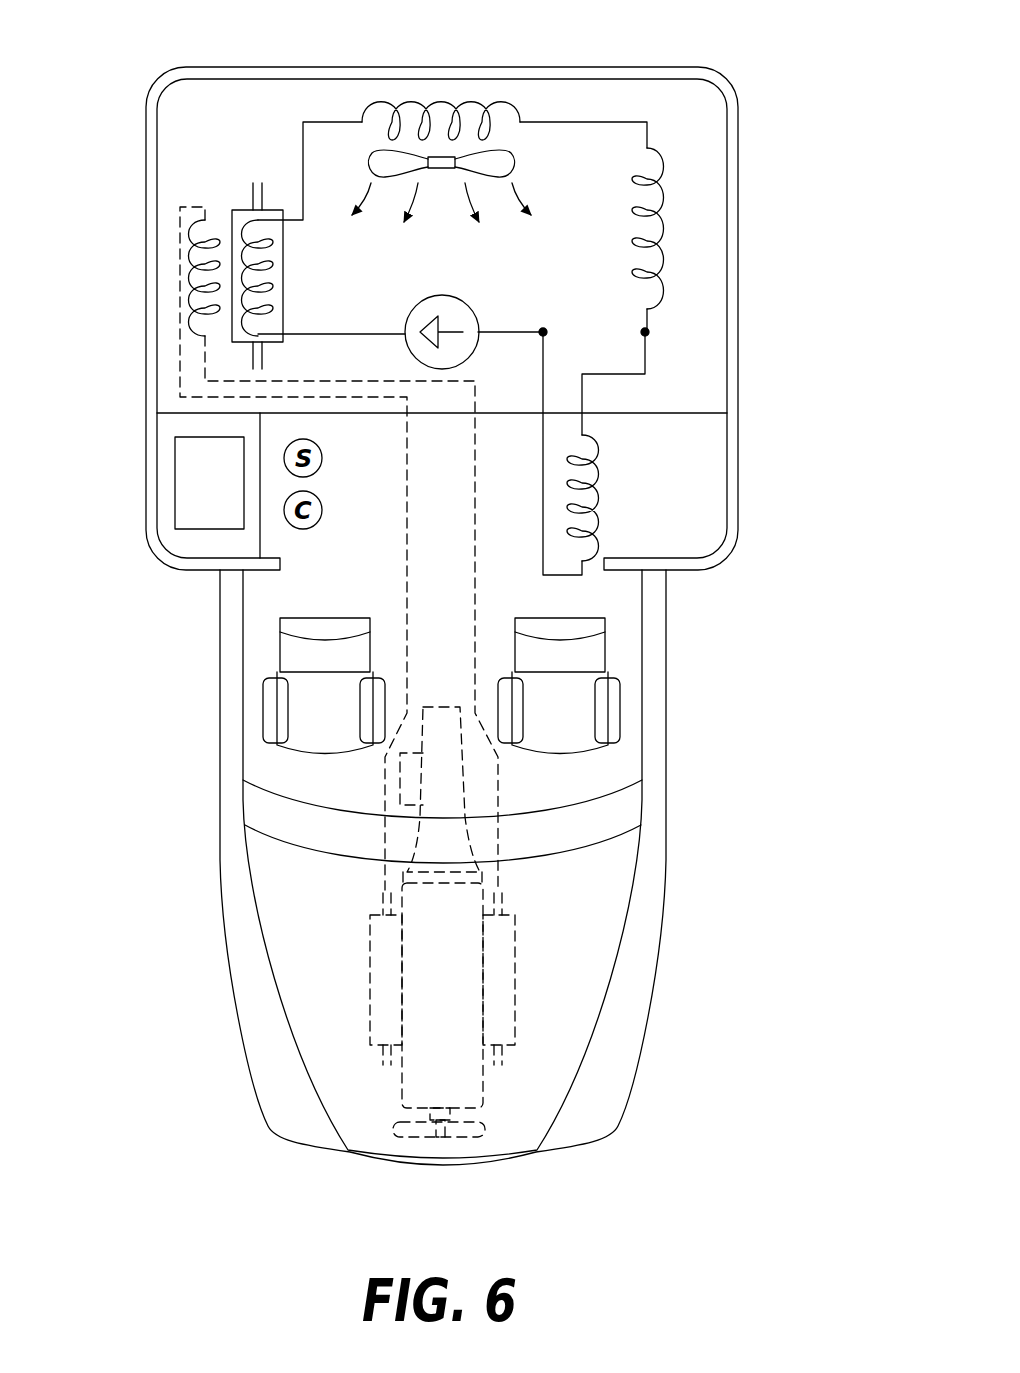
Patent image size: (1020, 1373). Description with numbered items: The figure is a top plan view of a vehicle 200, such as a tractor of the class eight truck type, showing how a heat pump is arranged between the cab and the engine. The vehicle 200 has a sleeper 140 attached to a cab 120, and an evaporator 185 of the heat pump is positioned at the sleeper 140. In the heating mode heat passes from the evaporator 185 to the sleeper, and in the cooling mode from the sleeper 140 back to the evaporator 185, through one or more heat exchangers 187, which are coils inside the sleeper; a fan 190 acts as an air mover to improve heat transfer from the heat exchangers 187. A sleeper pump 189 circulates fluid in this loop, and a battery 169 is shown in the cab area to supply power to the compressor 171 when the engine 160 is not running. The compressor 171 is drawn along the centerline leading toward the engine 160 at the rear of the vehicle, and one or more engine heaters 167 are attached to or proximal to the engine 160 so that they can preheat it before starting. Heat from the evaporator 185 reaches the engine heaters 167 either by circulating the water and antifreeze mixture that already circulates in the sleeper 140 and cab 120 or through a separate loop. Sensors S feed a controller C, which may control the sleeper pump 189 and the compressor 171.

The cab 120 is at (718, 442).
The sleeper 140 is at (710, 255).
The engine 160 is at (485, 1083).
The engine heaters 167 is at (370, 977).
The battery 169 is at (175, 478).
The compressor 171 is at (400, 778).
The evaporator 185 is at (194, 265).
The heat exchangers 187 is at (447, 105).
The sleeper pump 189 is at (476, 352).
The fan 190 is at (517, 160).
The vehicle 200 is at (128, 636).